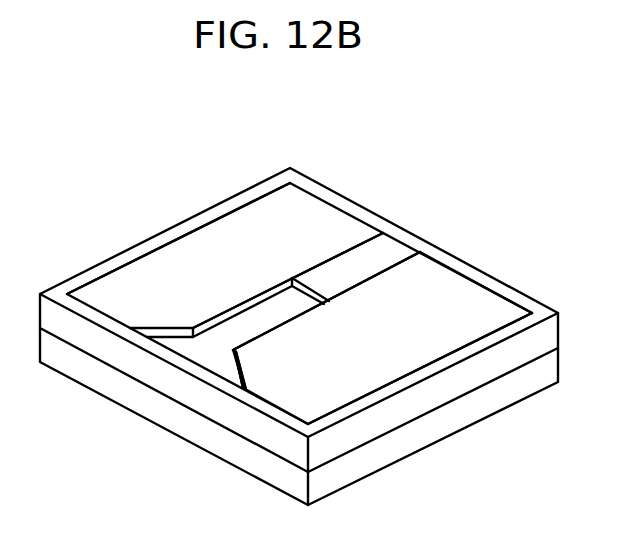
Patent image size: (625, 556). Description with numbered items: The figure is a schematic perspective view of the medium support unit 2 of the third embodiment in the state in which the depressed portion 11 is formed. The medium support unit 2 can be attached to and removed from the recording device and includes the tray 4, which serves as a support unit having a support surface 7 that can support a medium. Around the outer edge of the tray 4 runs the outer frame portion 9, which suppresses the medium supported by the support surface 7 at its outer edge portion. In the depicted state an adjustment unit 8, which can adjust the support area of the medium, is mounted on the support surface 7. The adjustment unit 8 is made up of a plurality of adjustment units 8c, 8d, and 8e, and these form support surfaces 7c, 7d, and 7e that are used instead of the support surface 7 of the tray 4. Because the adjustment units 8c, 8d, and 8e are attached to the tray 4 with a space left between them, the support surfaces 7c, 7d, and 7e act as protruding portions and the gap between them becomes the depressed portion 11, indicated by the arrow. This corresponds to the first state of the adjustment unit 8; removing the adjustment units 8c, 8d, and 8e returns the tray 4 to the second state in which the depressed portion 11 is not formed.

The medium support unit 2 is at (490, 120).
The tray 4 is at (69, 364).
The outer frame portion 9 is at (192, 223).
The support surface 7 is at (351, 256).
The support surface 7c is at (296, 221).
The support surface 7d is at (373, 267).
The support surface 7e is at (442, 300).
The adjustment unit 8 is at (327, 341).
The adjustment unit 8c is at (255, 212).
The adjustment unit 8d is at (348, 271).
The adjustment unit 8e is at (418, 348).
The depressed portion 11 is at (216, 352).